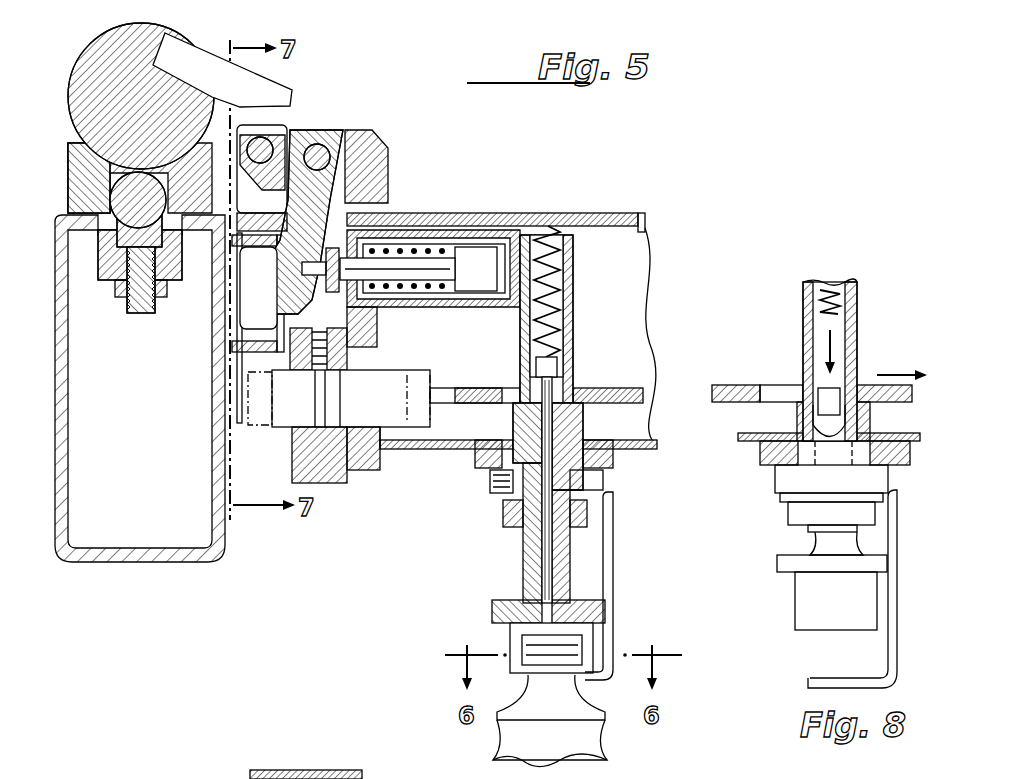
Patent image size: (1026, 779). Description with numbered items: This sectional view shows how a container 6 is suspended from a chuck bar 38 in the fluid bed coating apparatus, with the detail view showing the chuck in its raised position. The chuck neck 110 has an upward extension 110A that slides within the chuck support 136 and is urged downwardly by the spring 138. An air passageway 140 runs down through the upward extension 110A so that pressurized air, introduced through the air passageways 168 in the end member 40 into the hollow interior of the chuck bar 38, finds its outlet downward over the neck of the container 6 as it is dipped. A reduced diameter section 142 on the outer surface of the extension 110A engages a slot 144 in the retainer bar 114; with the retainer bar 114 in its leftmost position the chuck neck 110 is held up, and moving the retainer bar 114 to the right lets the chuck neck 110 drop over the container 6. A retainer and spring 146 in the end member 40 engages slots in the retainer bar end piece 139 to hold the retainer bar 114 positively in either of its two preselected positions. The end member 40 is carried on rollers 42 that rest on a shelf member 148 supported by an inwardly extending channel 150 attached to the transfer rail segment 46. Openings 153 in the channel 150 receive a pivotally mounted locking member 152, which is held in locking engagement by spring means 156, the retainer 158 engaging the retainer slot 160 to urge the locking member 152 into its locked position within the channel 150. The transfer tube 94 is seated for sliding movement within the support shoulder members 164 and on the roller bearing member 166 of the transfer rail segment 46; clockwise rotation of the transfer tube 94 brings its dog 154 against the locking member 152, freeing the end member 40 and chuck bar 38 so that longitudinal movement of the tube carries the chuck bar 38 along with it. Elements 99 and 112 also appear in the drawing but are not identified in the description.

In FIG. 5, the transfer tube 94 is at (118, 58).
In FIG. 5, the dog 154 is at (290, 92).
In FIG. 5, the support shoulder members 164 is at (128, 168).
In FIG. 5, the roller bearing member 166 is at (98, 250).
In FIG. 5, the transfer rail segment 46 is at (138, 560).
In FIG. 5, the shelf member 148 is at (236, 272).
In FIG. 5, the inwardly extending channel 150 is at (236, 383).
In FIG. 5, the openings 153 is at (268, 330).
In FIG. 5, the rollers 42 is at (284, 128).
In FIG. 5, the pivotally mounted locking member 152 is at (300, 128).
In FIG. 5, the pivot pin 99 is at (328, 152).
In FIG. 5, the end member 40 is at (372, 175).
In FIG. 5, the retainer slot 160 is at (285, 265).
In FIG. 5, the chuck bar 38 is at (632, 214).
In FIG. 8, the chuck bar 38 is at (748, 456).
In FIG. 5, the spring means 156 is at (400, 240).
In FIG. 5, the retainer 158 is at (331, 292).
In FIG. 5, the retainer and spring 146 is at (350, 342).
In FIG. 5, the retainer bar end piece 139 is at (388, 382).
In FIG. 5, the air passageways 168 is at (328, 487).
In FIG. 5, the slot 144 is at (510, 390).
In FIG. 8, the slot 144 is at (775, 396).
In FIG. 5, the retainer bar 114 is at (606, 388).
In FIG. 8, the retainer bar 114 is at (724, 386).
In FIG. 5, the chuck support 136 is at (575, 268).
In FIG. 8, the chuck support 136 is at (857, 292).
In FIG. 5, the upward extension 110A is at (574, 318).
In FIG. 5, the spring 138 is at (548, 230).
In FIG. 8, the spring 138 is at (826, 285).
In FIG. 5, the reduced diameter section 142 is at (566, 440).
In FIG. 8, the reduced diameter section 142 is at (810, 388).
In FIG. 5, the air passageway 140 is at (542, 554).
In FIG. 5, the chuck neck 110 is at (508, 640).
In FIG. 8, the chuck neck 110 is at (805, 598).
In FIG. 5, the bracket 112 is at (613, 520).
In FIG. 8, the bracket 112 is at (808, 680).
In FIG. 5, the containers 6 is at (590, 750).